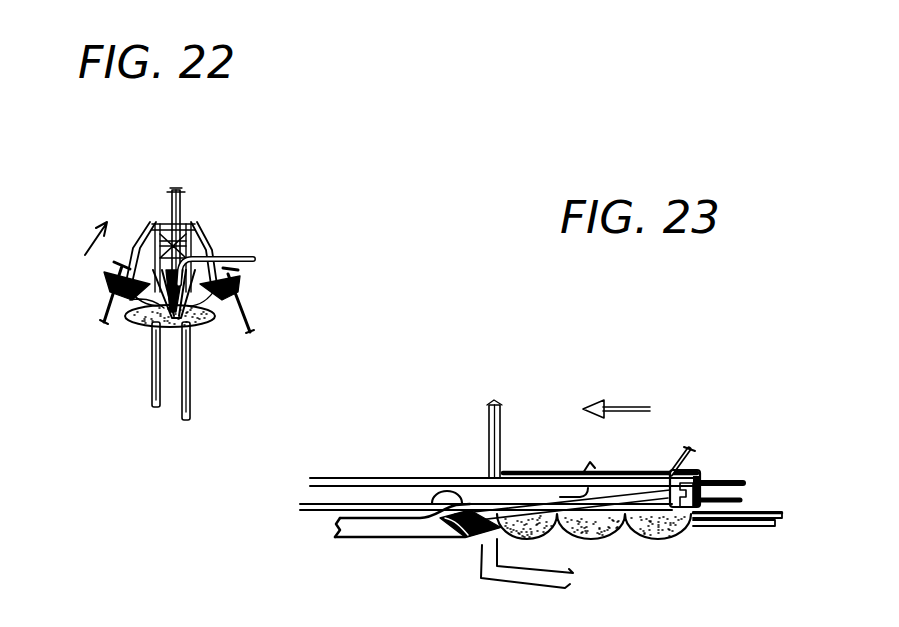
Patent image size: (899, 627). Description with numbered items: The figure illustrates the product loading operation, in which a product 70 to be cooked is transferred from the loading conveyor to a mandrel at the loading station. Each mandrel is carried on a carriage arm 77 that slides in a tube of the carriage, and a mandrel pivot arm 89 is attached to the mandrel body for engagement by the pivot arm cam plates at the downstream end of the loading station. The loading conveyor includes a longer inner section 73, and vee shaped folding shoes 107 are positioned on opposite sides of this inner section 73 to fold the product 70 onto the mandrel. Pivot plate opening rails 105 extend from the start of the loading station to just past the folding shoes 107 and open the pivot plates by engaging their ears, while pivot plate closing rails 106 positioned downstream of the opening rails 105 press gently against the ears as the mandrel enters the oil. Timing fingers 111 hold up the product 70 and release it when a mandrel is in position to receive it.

In FIG. 22, the carriage arm 77 is at (182, 208).
In FIG. 23, the carriage arm 77 is at (500, 420).
In FIG. 22, the mandrel pivot arm 89 is at (244, 258).
In FIG. 23, the mandrel pivot arm 89 is at (692, 452).
In FIG. 22, the pivot plate opening rails 105 is at (250, 310).
In FIG. 23, the pivot plate opening rails 105 is at (742, 500).
In FIG. 22, the product 70 is at (135, 323).
In FIG. 23, the product 70 is at (657, 541).
In FIG. 22, the longer inner section 73 is at (196, 387).
In FIG. 23, the longer inner section 73 is at (722, 533).
In FIG. 23, the pivot plate closing rails 106 is at (375, 504).
In FIG. 23, the folding shoes 107 is at (398, 538).
In FIG. 23, the timing fingers 111 is at (515, 583).